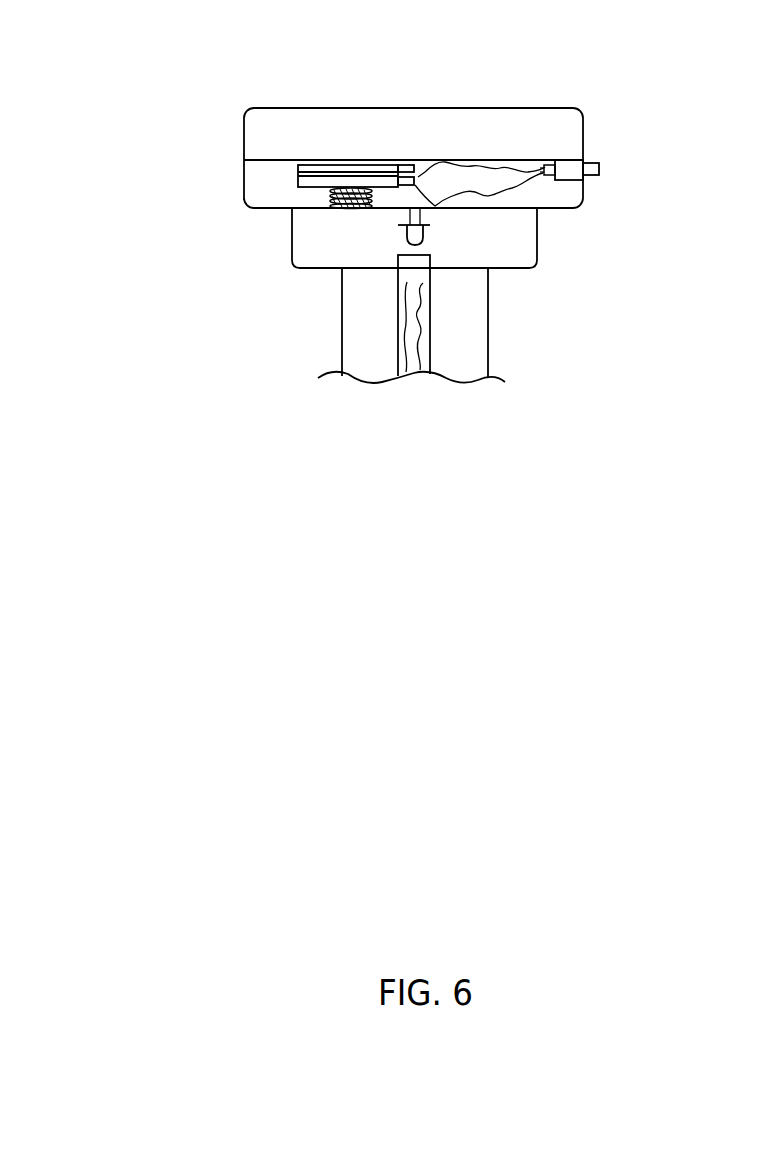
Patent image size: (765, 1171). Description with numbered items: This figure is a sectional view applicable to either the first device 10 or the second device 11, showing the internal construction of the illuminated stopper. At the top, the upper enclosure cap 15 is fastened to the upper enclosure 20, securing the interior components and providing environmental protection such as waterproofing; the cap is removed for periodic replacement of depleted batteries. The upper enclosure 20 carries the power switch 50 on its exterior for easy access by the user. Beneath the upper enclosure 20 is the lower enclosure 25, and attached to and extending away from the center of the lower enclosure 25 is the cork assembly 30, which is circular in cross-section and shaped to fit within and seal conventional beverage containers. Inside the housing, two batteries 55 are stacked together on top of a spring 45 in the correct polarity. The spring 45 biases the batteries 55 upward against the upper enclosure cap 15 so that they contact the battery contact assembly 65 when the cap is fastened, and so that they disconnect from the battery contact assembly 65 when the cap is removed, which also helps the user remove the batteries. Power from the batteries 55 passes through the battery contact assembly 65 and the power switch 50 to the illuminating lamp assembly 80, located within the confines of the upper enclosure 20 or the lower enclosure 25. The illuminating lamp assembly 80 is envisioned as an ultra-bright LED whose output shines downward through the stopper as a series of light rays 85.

The first device 10 is at (153, 662).
The second device 11 is at (104, 682).
The upper enclosure cap 15 is at (293, 108).
The upper enclosure 20 is at (582, 207).
The lower enclosure 25 is at (292, 248).
The cork assembly 30 is at (341, 336).
The spring 45 is at (340, 205).
The power switch 50 is at (600, 169).
The batteries 55 is at (312, 169).
The battery contact assembly 65 is at (407, 206).
The illuminating lamp assembly 80 is at (407, 228).
The light rays 85 is at (420, 337).